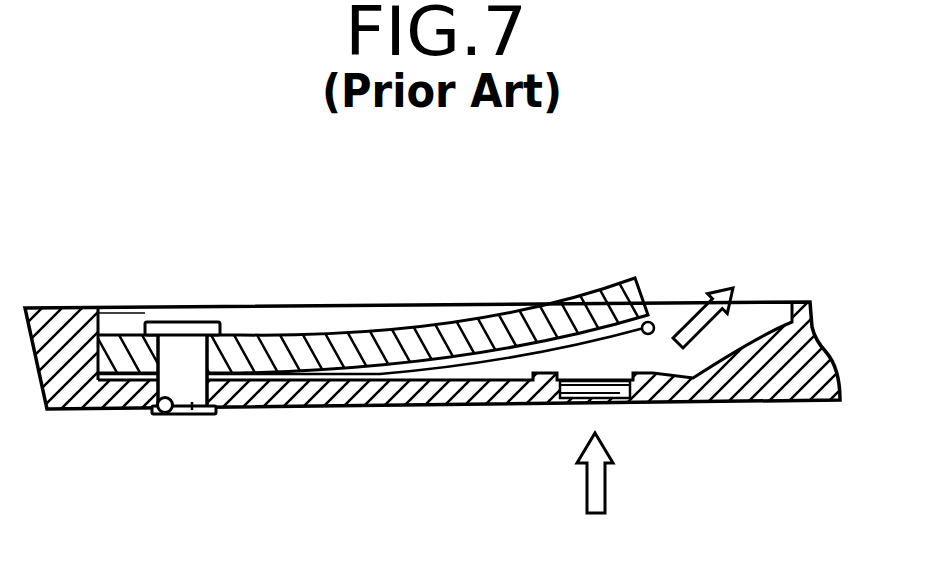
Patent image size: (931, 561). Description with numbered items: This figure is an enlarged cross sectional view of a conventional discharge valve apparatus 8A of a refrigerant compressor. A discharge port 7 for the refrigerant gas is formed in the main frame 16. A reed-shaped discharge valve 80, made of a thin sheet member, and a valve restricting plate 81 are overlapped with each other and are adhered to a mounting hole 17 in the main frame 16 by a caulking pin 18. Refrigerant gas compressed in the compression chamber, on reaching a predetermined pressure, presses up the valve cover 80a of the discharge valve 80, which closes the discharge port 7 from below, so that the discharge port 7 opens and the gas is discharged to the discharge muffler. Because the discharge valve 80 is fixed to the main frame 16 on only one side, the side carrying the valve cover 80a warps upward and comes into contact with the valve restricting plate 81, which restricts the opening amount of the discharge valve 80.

The conventional discharge valve apparatus 8A is at (418, 325).
The valve restricting plate 81 is at (435, 325).
The discharge valve 80 is at (500, 368).
The valve cover 80a is at (662, 318).
The caulking pin 18 is at (199, 414).
The mounting hole 17 is at (166, 414).
The discharge port 7 is at (620, 398).
The main frame 16 is at (803, 400).